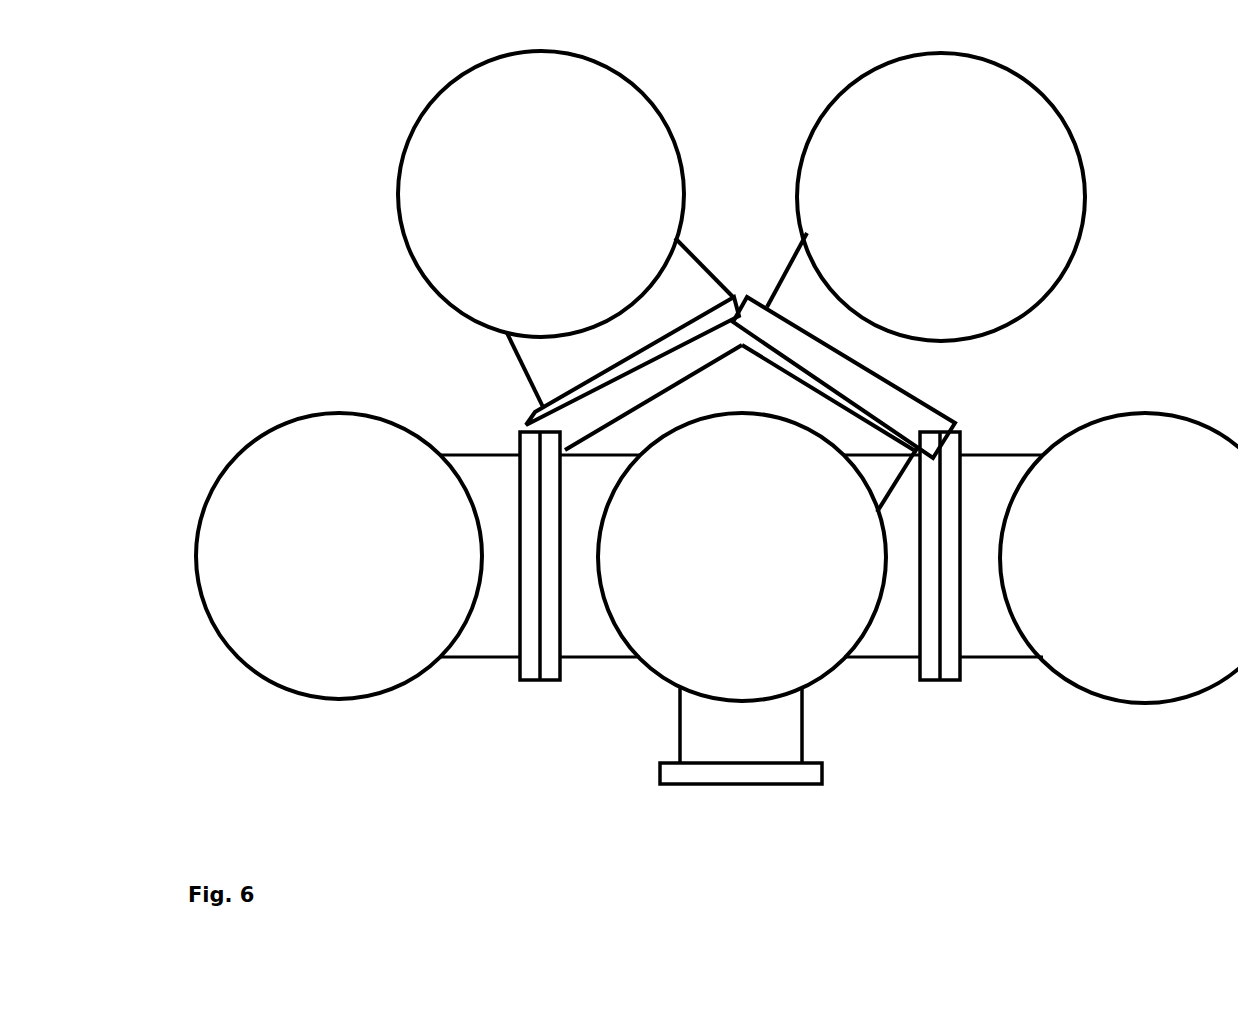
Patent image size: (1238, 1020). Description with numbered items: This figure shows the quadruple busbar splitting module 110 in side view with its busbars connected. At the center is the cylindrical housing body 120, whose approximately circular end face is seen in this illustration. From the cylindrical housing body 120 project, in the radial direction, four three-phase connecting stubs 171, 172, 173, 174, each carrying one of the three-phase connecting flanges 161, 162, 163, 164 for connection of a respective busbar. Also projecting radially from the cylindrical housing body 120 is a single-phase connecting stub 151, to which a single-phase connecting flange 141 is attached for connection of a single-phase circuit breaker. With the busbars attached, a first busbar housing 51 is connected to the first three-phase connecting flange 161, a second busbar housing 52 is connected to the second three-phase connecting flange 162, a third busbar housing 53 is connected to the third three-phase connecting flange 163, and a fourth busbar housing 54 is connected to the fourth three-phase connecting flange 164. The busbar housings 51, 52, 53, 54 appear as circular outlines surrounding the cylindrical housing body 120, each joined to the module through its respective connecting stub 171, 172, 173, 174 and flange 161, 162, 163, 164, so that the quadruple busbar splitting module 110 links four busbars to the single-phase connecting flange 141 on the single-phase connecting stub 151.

The first busbar housing 51 is at (255, 505).
The second busbar housing 52 is at (438, 160).
The third busbar housing 53 is at (857, 117).
The fourth busbar housing 54 is at (1157, 455).
The quadruple busbar splitting module 110 is at (673, 653).
The cylindrical housing body 120 is at (790, 585).
The single-phase connecting flange 141 is at (702, 778).
The single-phase connecting stub 151 is at (783, 723).
The first three-phase connecting flange 161 is at (548, 647).
The second three-phase connecting flange 162 is at (643, 429).
The third three-phase connecting flange 163 is at (770, 345).
The fourth three-phase connecting flange 164 is at (932, 488).
The three-phase connecting stub 171 is at (590, 642).
The three-phase connecting stub 172 is at (587, 424).
The three-phase connecting stub 173 is at (802, 287).
The three-phase connecting stub 174 is at (902, 540).